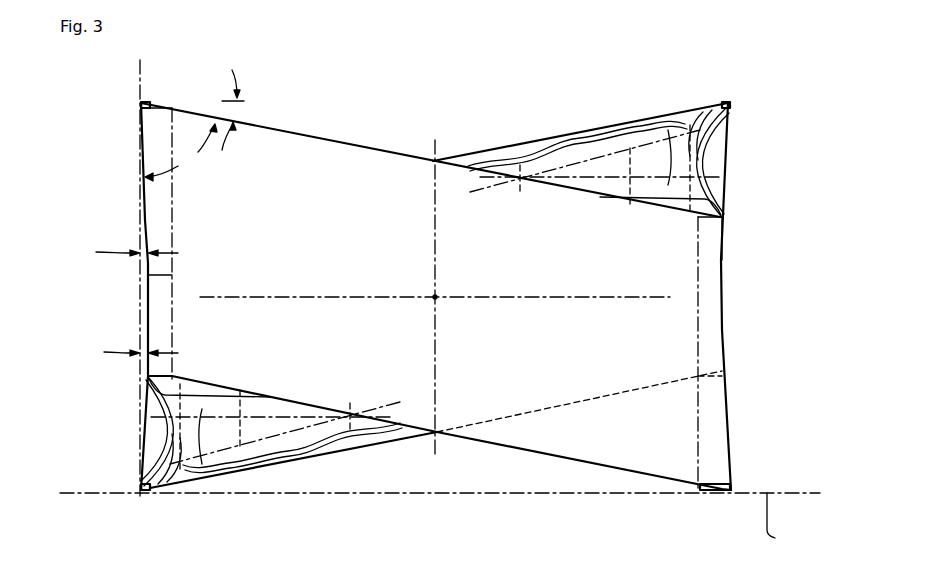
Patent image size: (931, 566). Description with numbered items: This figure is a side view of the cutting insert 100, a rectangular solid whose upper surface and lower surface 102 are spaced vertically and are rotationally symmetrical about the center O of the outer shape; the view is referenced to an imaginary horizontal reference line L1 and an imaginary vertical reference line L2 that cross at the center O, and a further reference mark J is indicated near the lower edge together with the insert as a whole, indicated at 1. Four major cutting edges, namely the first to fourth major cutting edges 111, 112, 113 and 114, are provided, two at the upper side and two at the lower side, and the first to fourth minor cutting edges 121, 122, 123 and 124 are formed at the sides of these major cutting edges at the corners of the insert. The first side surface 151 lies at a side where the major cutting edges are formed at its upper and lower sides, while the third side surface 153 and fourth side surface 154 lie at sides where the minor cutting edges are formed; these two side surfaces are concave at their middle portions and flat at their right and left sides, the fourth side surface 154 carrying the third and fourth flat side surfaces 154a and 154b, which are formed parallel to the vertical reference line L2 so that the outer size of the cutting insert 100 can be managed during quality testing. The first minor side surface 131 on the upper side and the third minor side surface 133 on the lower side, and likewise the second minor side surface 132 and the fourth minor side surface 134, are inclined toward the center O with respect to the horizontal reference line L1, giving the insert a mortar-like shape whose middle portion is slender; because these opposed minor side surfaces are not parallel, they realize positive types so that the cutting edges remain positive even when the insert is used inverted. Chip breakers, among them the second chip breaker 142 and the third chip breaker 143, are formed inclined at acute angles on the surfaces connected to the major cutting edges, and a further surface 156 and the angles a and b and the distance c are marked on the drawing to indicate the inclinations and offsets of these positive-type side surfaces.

The cutting insert 1 is at (122, 102).
The cutting insert 100 is at (435, 291).
The lower surface 102 is at (273, 462).
The first major cutting edge 111 is at (297, 126).
The second major cutting edge 112 is at (680, 112).
The third major cutting edge 113 is at (633, 395).
The fourth major cutting edge 114 is at (590, 478).
The first minor cutting edge 121 is at (162, 105).
The second minor cutting edge 122 is at (706, 105).
The third minor cutting edge 123 is at (162, 494).
The fourth minor cutting edge 124 is at (712, 494).
The first minor side surface 131 is at (163, 203).
The second minor side surface 132 is at (735, 150).
The third minor side surface 133 is at (148, 401).
The fourth minor side surface 134 is at (732, 433).
The second chip breaker 142 is at (542, 143).
The third chip breaker 143 is at (380, 455).
The first side surface 151 is at (372, 180).
The third side surface 153 is at (163, 431).
The fourth side surface 154 is at (712, 173).
The third flat side surface 154a is at (725, 241).
The fourth flat side surface 154b is at (718, 362).
The side clearance surface 156 is at (147, 298).
The imaginary horizontal reference line L1 is at (322, 295).
The imaginary vertical reference line L2 is at (140, 63).
The center O is at (436, 300).
The reference line J is at (775, 521).
The angle a is at (233, 101).
The angle b is at (181, 152).
The distance c is at (131, 298).